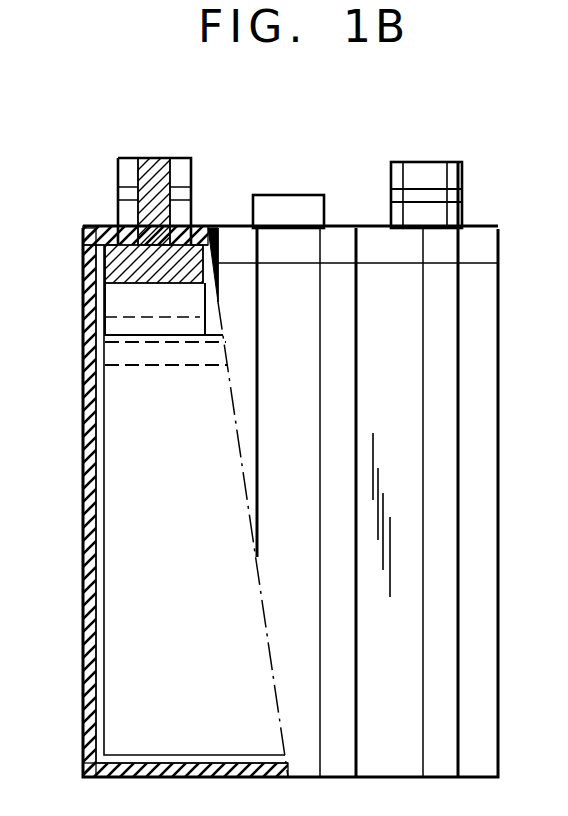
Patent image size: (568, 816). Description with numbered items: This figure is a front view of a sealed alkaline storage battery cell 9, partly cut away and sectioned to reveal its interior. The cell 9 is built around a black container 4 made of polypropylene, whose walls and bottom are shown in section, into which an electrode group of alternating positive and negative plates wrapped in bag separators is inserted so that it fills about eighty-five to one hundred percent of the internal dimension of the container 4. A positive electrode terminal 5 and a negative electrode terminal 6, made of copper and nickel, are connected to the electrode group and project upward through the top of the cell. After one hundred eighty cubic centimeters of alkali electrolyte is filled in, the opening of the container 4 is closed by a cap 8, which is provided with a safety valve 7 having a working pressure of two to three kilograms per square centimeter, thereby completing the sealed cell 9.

The container 4 is at (92, 585).
The positive electrode terminal 5 is at (148, 167).
The negative electrode terminal 6 is at (422, 167).
The safety valve 7 is at (287, 197).
The cap 8 is at (498, 249).
The cell 9 is at (473, 227).